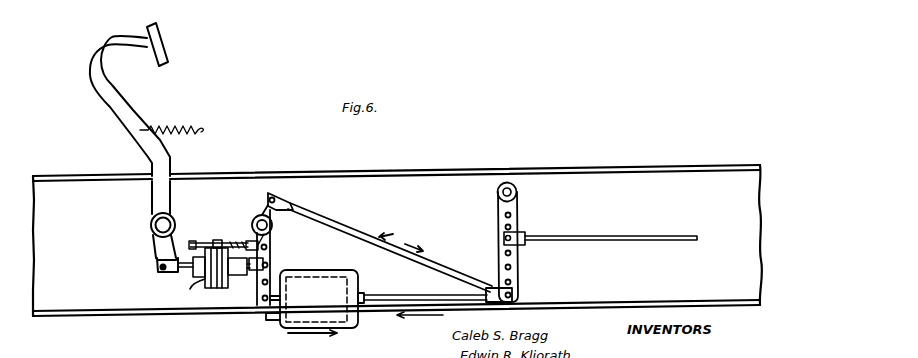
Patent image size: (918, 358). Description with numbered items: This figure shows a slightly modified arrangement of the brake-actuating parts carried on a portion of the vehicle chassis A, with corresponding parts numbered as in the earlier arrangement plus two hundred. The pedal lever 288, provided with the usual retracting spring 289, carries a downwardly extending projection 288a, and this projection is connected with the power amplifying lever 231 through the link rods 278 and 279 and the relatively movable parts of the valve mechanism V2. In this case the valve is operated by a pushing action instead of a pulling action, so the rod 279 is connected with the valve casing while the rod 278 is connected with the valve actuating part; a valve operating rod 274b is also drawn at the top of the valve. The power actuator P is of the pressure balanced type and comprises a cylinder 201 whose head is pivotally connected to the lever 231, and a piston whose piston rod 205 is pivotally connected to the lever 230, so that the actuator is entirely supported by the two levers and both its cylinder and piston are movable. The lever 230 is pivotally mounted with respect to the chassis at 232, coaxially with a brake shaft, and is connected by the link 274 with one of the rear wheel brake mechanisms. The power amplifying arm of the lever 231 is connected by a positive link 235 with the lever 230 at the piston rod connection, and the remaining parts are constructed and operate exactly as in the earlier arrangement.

The chassis portion A is at (617, 177).
The pedal lever 288 is at (127, 117).
The downwardly extending projection 288a is at (159, 244).
The retracting spring 289 is at (176, 121).
The link rod 279 is at (187, 272).
The valve mechanism V2 is at (218, 253).
The valve operating rod 274b is at (200, 243).
The link rod 278 is at (245, 271).
The power amplifying lever 231 is at (270, 254).
The positive link 235 is at (357, 221).
The lever 230 is at (513, 275).
The pivot 232 is at (514, 192).
The link 274 is at (627, 239).
The power actuator P is at (318, 275).
The cylinder 201 is at (309, 305).
The piston rod 205 is at (397, 296).